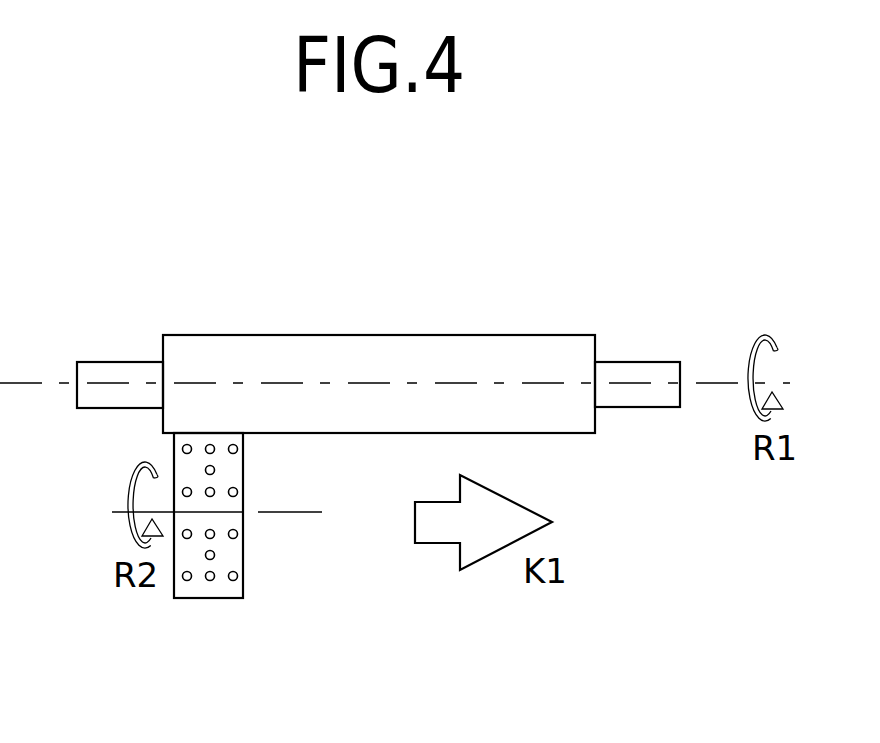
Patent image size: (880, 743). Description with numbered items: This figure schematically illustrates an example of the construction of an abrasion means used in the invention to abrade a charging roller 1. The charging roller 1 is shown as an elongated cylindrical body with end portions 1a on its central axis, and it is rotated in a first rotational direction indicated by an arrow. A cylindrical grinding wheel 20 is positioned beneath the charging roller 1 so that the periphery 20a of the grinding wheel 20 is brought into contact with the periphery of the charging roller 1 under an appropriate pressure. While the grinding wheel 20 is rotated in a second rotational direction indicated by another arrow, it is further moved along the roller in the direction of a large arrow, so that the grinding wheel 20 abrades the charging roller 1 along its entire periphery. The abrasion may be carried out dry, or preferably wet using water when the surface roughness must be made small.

The charging roller 1 is at (338, 330).
The shaft portion 1a is at (643, 382).
The cylindrical grinding wheel 20 is at (230, 568).
The periphery of the grinding wheel 20a is at (240, 585).